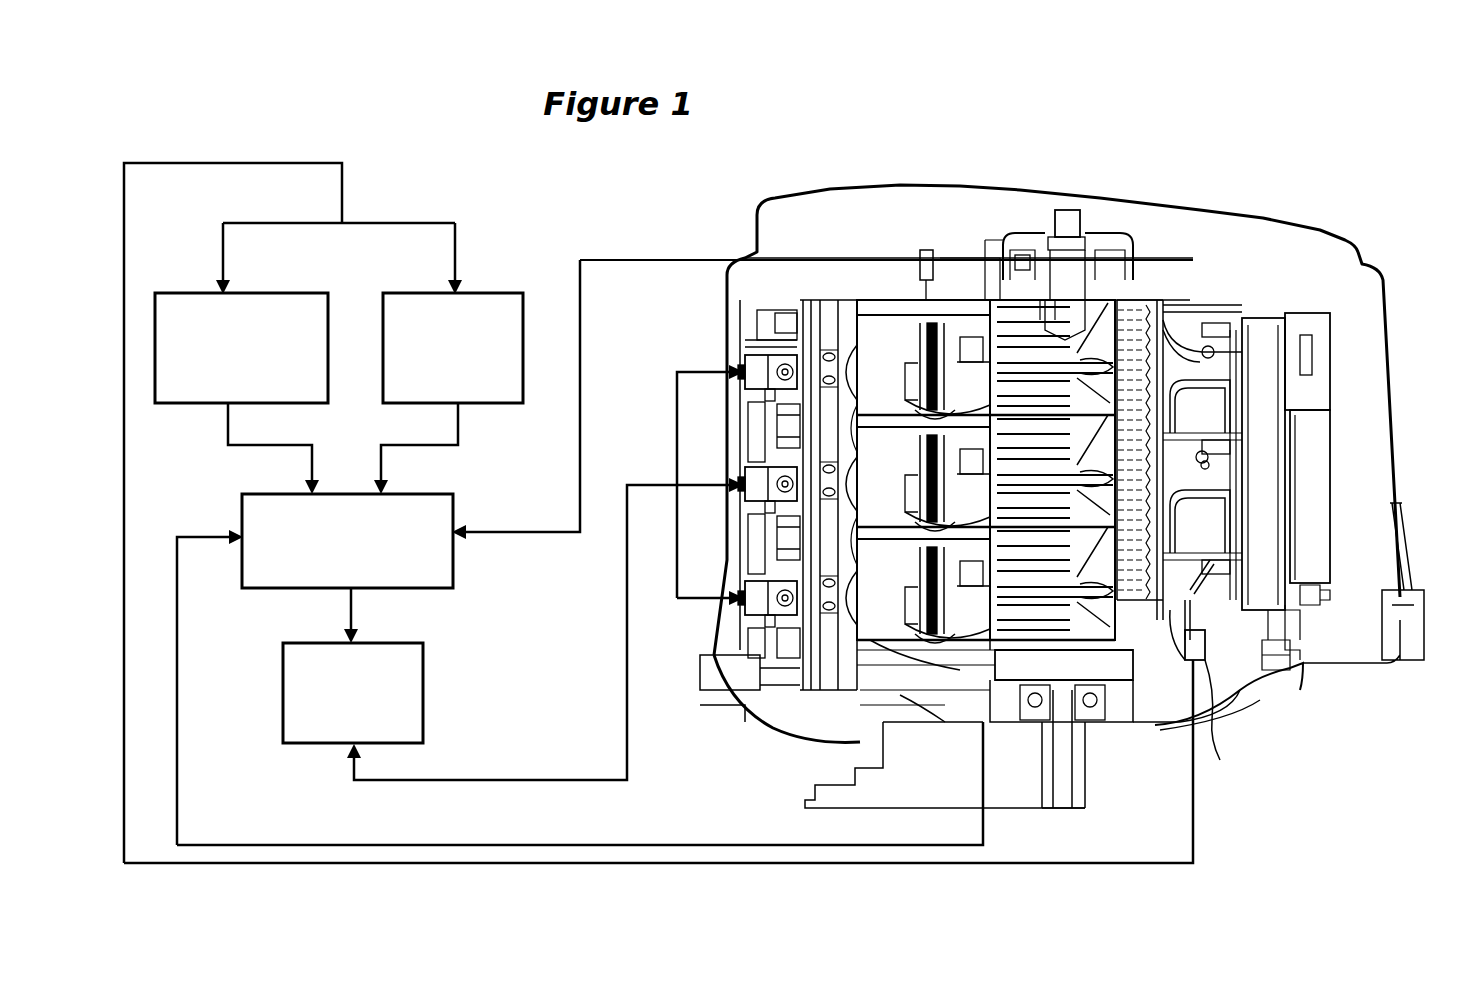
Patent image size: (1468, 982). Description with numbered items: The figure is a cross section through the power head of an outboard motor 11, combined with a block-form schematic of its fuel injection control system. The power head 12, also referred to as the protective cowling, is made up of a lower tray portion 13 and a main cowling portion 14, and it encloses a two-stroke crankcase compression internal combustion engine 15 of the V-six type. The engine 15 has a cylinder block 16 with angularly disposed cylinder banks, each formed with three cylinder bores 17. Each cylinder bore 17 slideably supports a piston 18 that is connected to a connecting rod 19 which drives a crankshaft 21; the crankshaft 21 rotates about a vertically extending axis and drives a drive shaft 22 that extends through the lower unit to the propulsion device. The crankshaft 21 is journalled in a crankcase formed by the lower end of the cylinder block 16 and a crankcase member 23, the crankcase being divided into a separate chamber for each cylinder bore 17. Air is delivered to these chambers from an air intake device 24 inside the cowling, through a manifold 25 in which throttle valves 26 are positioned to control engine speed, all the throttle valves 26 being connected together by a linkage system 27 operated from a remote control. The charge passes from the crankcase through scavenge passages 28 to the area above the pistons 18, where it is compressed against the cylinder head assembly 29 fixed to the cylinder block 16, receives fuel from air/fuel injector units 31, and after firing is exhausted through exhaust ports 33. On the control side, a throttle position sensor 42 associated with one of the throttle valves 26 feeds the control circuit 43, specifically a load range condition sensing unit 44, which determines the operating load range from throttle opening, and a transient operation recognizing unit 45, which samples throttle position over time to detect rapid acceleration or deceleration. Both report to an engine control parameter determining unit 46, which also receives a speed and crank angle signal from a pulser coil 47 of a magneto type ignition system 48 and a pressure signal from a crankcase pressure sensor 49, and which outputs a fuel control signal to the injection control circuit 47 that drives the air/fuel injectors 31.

The outboard motor 11 is at (1355, 207).
The power head 12 is at (1083, 463).
The lower tray portion 13 is at (1400, 655).
The main cowling portion 14 is at (1388, 322).
The internal combustion engine 15 is at (1198, 298).
The cylinder block 16 is at (885, 300).
The cylinder bore 17 is at (907, 340).
The piston 18 is at (950, 330).
The connecting rod 19 is at (1050, 330).
The crankshaft 21 is at (1062, 240).
The drive shaft 22 is at (1080, 790).
The crankcase member 23 is at (1152, 288).
The air intake device 24 is at (1275, 320).
The manifold 25 is at (1262, 692).
The throttle valve 26 is at (1178, 660).
The linkage system 27 is at (1235, 405).
The scavenge passage 28 is at (924, 483).
The cylinder head assembly 29 is at (830, 265).
The air/fuel injector unit 31 is at (745, 345).
The exhaust port 33 is at (898, 401).
The throttle position sensor 42 is at (1212, 720).
The control circuit 43 is at (380, 195).
The load range condition sensing unit 44 is at (262, 293).
The transient operation recognizing unit 45 is at (478, 293).
The engine control parameter determining unit 46 is at (432, 494).
The injection control circuit 47 is at (423, 688).
The magneto type ignition system 48 is at (995, 218).
The crankcase pressure sensor 49 is at (945, 720).